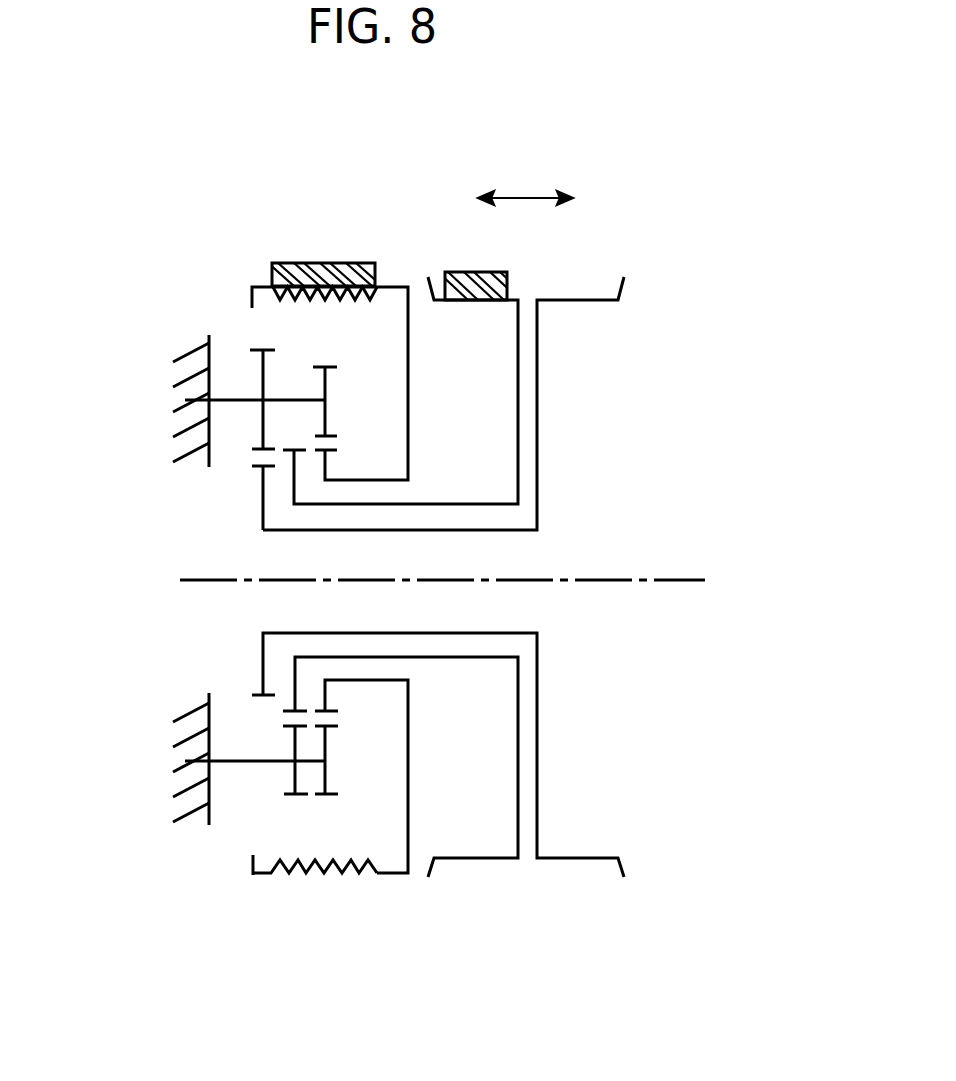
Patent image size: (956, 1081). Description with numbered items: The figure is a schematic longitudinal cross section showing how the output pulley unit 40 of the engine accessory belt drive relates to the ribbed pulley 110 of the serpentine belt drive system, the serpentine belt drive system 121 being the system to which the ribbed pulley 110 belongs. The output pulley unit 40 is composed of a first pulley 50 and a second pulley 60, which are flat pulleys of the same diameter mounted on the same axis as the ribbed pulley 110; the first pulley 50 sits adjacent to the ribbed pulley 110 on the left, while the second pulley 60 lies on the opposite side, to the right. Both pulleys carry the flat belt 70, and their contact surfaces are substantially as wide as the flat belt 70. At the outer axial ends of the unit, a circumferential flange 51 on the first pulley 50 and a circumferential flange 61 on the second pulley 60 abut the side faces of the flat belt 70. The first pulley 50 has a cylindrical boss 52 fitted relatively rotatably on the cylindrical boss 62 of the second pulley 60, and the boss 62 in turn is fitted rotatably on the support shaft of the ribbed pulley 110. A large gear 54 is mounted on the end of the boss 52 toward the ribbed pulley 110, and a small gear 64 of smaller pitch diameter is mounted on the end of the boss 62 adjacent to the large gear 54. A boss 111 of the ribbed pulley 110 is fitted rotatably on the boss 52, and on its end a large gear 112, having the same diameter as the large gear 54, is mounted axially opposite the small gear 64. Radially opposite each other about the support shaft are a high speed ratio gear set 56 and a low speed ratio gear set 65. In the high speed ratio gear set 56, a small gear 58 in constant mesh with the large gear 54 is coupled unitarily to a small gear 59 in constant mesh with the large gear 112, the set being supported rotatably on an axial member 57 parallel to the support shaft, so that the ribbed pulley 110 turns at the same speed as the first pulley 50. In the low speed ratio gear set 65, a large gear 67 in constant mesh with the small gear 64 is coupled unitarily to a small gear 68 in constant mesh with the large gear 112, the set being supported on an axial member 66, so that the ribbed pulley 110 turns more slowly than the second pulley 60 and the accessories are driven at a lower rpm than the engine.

The output pulley unit 40 is at (521, 963).
The first pulley 50 is at (476, 866).
The circumferential flange 51 is at (436, 878).
The cylindrical boss 52 is at (443, 658).
The large gear 54 is at (297, 680).
The high speed ratio gear set 56 is at (264, 873).
The axial member 57 is at (237, 760).
The small gear 58 is at (296, 795).
The small gear 59 is at (325, 795).
The second pulley 60 is at (568, 866).
The circumferential flange 61 is at (615, 878).
The cylindrical boss 62 is at (453, 528).
The small gear 64 is at (262, 493).
The low speed ratio gear set 65 is at (231, 306).
The axial member 66 is at (233, 398).
The large gear 67 is at (253, 350).
The small gear 68 is at (317, 367).
The flat belt 70 is at (470, 272).
The ribbed pulley 110 is at (327, 875).
The boss 111 is at (368, 687).
The large gear 112 is at (328, 465).
The spring 121 is at (318, 263).